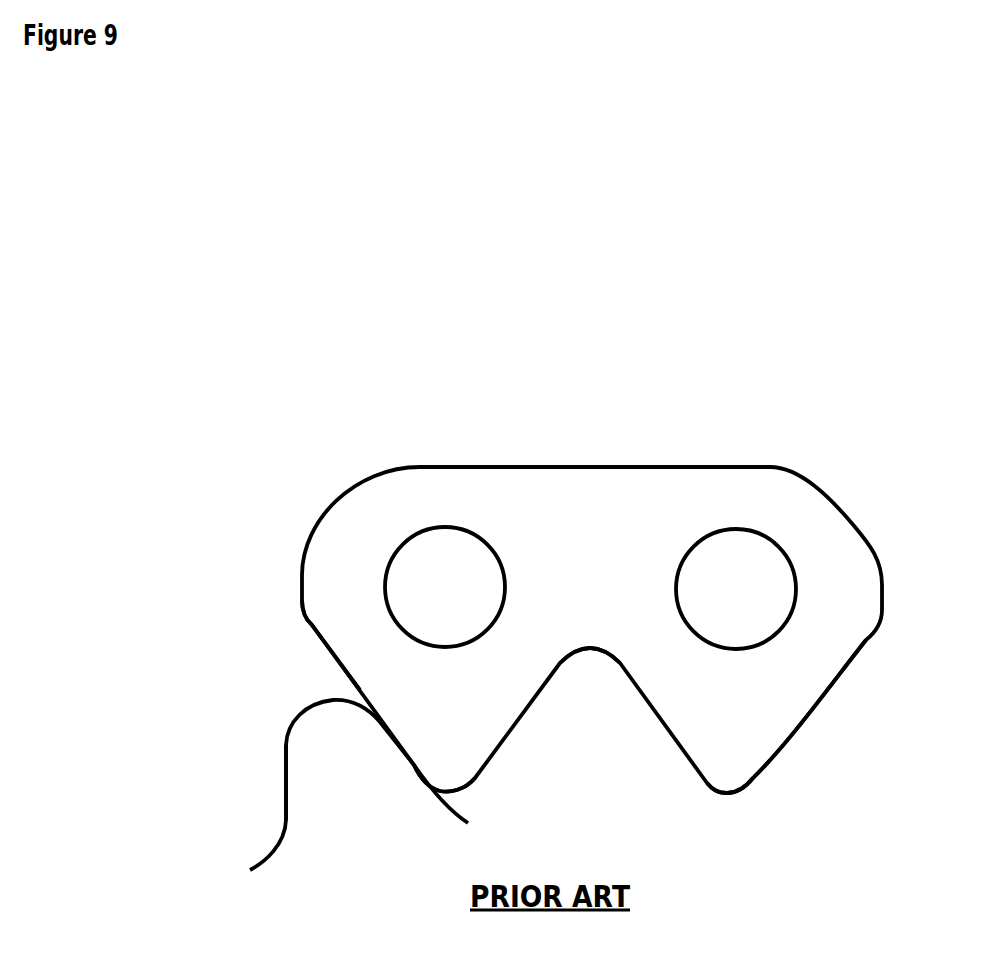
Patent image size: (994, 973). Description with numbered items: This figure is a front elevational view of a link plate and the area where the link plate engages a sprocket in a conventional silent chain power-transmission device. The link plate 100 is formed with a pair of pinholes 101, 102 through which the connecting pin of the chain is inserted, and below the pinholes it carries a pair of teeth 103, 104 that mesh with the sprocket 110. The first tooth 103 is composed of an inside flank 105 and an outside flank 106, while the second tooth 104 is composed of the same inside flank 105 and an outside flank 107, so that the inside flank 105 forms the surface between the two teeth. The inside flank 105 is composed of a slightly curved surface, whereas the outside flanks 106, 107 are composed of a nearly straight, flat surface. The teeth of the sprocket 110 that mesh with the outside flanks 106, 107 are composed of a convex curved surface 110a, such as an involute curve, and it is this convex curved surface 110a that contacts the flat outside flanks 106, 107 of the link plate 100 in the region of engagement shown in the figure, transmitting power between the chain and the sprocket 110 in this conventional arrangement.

The link plate 100 is at (645, 399).
The pinhole 101 is at (406, 543).
The pinhole 102 is at (762, 546).
The tooth 103 is at (461, 777).
The tooth 104 is at (717, 774).
The inside flank 105 is at (650, 705).
The outside flank 106 is at (341, 666).
The outside flank 107 is at (807, 717).
The sprocket 110 is at (300, 746).
The convex curved surface 110a is at (284, 800).